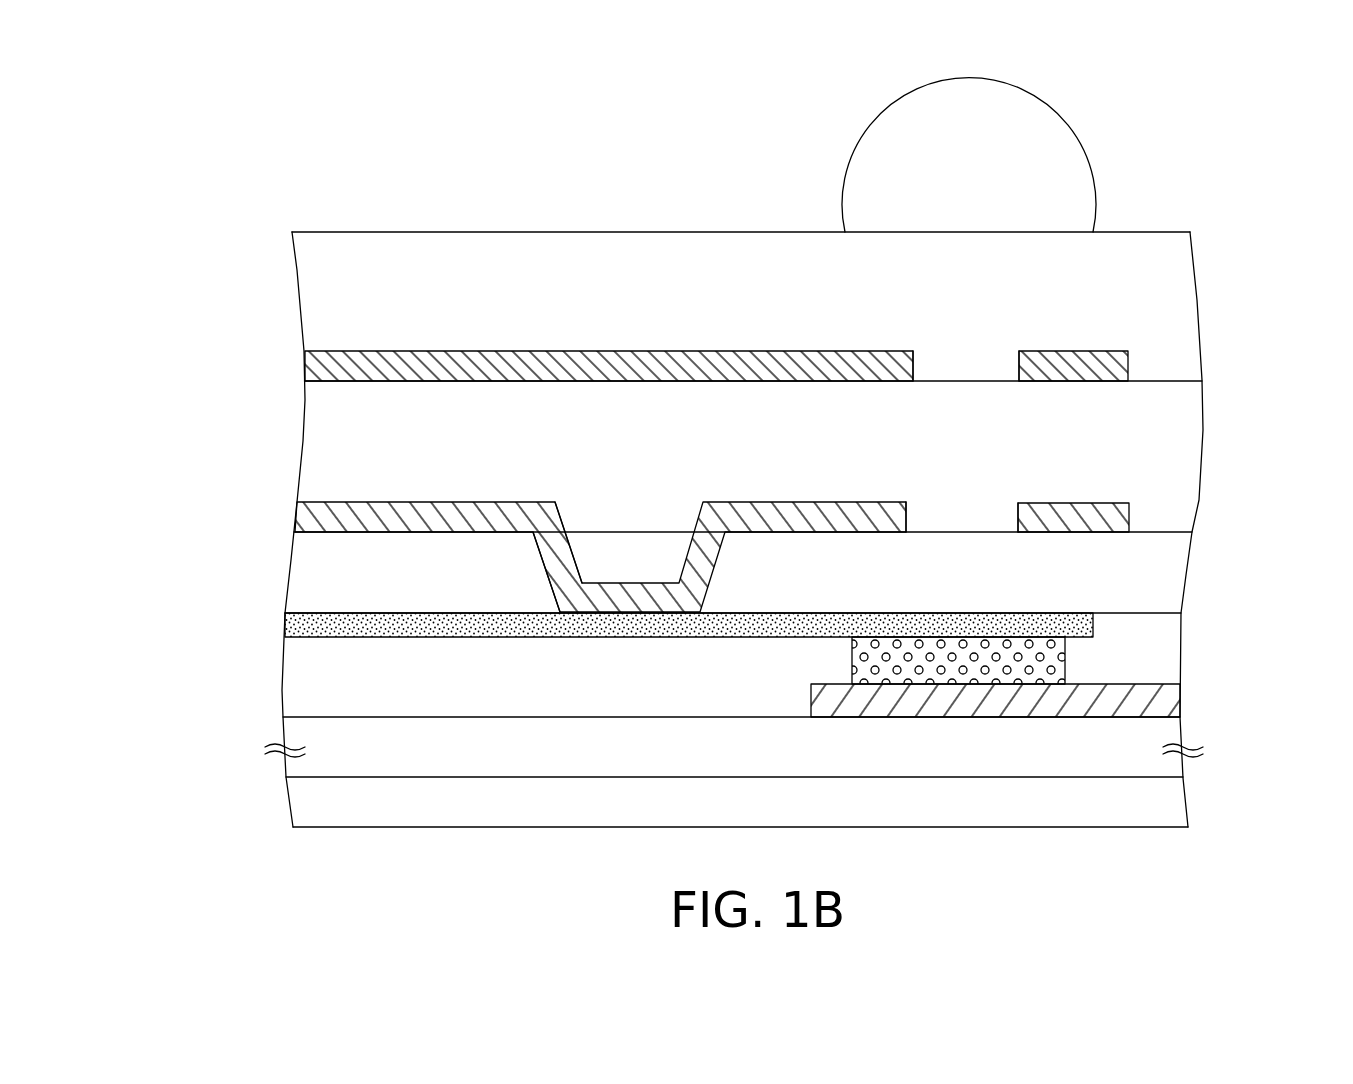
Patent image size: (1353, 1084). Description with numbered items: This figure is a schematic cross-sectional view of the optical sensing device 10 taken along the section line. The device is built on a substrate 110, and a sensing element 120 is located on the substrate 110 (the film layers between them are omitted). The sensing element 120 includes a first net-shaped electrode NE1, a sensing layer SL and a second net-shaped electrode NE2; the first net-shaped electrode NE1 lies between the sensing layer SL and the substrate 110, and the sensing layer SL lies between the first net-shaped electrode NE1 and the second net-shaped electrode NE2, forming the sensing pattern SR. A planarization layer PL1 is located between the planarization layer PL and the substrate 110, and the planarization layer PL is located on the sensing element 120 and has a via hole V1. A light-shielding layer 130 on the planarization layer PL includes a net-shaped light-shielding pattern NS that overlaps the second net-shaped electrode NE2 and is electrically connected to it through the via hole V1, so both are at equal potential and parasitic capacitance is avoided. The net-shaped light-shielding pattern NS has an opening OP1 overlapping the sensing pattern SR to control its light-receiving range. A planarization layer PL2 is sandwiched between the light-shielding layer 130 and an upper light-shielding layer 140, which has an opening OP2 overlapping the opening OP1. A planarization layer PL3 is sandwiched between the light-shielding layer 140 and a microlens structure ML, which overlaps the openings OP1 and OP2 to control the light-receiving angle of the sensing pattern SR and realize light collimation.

The optical sensing device 10 is at (1310, 883).
The substrate 110 is at (292, 804).
The sensing element 120 is at (152, 74).
The first net-shaped electrode NE1 is at (1175, 703).
The second net-shaped electrode NE2 is at (1093, 628).
The sensing pattern SR is at (1075, 660).
The sensing layer SL is at (1055, 662).
The planarization layer PL1 is at (284, 668).
The planarization layer PL is at (290, 575).
The planarization layer PL2 is at (305, 441).
The planarization layer PL3 is at (303, 290).
The net-shaped light-shielding pattern NS is at (653, 557).
The light-shielding layer 130 is at (300, 517).
The light-shielding layer 140 is at (305, 367).
The via hole V1 is at (546, 567).
The opening OP1 is at (1015, 518).
The opening OP2 is at (1016, 369).
The microlens structure ML is at (1070, 158).